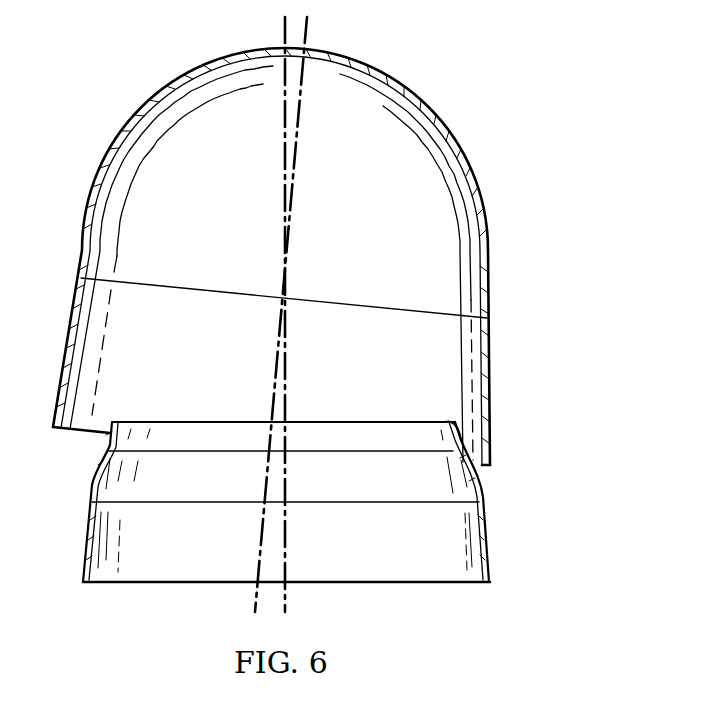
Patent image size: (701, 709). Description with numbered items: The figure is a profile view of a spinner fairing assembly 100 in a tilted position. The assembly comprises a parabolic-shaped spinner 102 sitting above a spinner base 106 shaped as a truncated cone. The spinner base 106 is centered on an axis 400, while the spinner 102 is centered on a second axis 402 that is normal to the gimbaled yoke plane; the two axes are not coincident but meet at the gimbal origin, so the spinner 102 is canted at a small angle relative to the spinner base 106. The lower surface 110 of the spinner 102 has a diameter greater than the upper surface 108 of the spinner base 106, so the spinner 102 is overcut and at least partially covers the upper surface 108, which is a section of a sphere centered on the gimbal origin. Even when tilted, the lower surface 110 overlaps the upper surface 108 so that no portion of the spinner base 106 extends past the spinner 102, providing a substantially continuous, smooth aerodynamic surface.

The spinner fairing assembly 100 is at (306, 322).
The spinner 102 is at (367, 63).
The spinner base 106 is at (414, 565).
The upper surface 108 is at (448, 432).
The lower surface 110 is at (484, 468).
The axis 400 is at (288, 603).
The second axis 402 is at (253, 604).